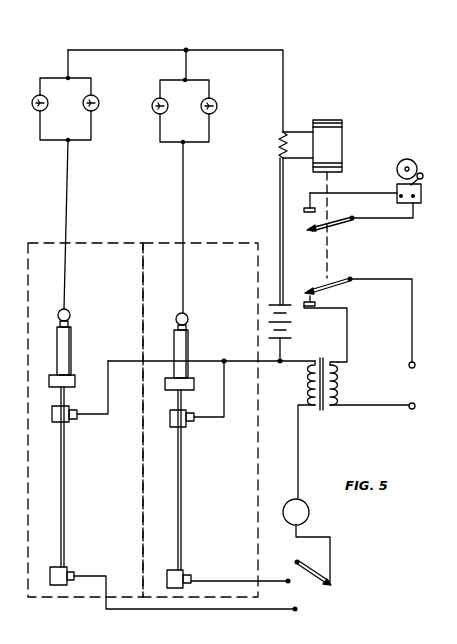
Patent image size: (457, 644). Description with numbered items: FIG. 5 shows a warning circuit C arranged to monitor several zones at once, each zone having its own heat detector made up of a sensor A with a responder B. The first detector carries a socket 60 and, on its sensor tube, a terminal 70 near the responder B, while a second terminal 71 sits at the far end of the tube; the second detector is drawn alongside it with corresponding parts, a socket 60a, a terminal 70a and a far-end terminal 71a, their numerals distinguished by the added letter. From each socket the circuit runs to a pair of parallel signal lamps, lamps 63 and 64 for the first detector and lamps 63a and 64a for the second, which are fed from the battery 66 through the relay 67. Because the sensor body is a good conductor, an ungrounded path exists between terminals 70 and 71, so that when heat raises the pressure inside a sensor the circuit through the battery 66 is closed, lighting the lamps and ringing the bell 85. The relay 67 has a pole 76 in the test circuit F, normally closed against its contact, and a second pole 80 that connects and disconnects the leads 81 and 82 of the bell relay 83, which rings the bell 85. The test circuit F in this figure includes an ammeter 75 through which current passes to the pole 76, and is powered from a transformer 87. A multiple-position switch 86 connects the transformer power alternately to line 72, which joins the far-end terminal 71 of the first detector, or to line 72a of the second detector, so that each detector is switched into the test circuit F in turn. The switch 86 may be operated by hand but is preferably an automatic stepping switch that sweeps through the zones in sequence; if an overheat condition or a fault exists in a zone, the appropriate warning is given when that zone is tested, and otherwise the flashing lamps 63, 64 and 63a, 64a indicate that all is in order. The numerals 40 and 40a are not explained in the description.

The electrical warning circuit C is at (206, 47).
The lamp 63 is at (47, 108).
The lamp 64 is at (98, 100).
The lamp 63a is at (152, 112).
The lamp 64a is at (217, 108).
The relay 67 is at (337, 149).
The lead 82 is at (382, 194).
The second pole 80 is at (333, 230).
The lead 81 is at (380, 221).
The bell relay 83 is at (421, 194).
The bell 85 is at (424, 154).
The pole 76 is at (335, 284).
The battery 66 is at (288, 329).
The transformer 87 is at (318, 410).
The ammeter 75 is at (309, 512).
The multiple-position switch 86 is at (328, 590).
The test circuit F is at (336, 552).
The socket 60 is at (70, 312).
The socket 60a is at (188, 317).
The responder B is at (72, 341).
The plate 40 is at (75, 376).
The plate 40a is at (194, 383).
The sensor A is at (66, 498).
The terminal 70 is at (72, 422).
The terminal 70a is at (189, 427).
The second terminal 71 is at (66, 567).
The second terminal 71a is at (183, 570).
The lead 72 is at (220, 612).
The lead 72a is at (242, 582).